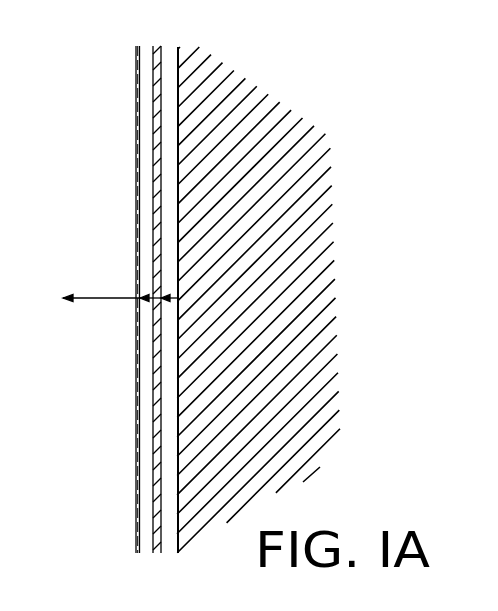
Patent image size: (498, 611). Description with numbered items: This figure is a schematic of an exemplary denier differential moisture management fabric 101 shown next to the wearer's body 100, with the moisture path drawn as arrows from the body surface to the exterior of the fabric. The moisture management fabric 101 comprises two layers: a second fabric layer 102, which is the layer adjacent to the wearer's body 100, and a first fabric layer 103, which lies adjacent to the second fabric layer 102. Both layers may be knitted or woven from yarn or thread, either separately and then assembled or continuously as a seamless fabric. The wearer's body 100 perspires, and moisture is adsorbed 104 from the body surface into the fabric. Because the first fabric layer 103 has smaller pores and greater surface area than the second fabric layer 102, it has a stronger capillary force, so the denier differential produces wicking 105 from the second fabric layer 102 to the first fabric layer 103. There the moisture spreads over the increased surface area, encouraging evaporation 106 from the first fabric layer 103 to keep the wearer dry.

The wearer's body 100 is at (280, 273).
The moisture management fabric 101 is at (130, 306).
The second fabric layer 102 is at (157, 53).
The first fabric layer 103 is at (134, 529).
The moisture adsorption 104 is at (172, 296).
The wicking 105 is at (150, 303).
The moisture evaporation 106 is at (80, 297).